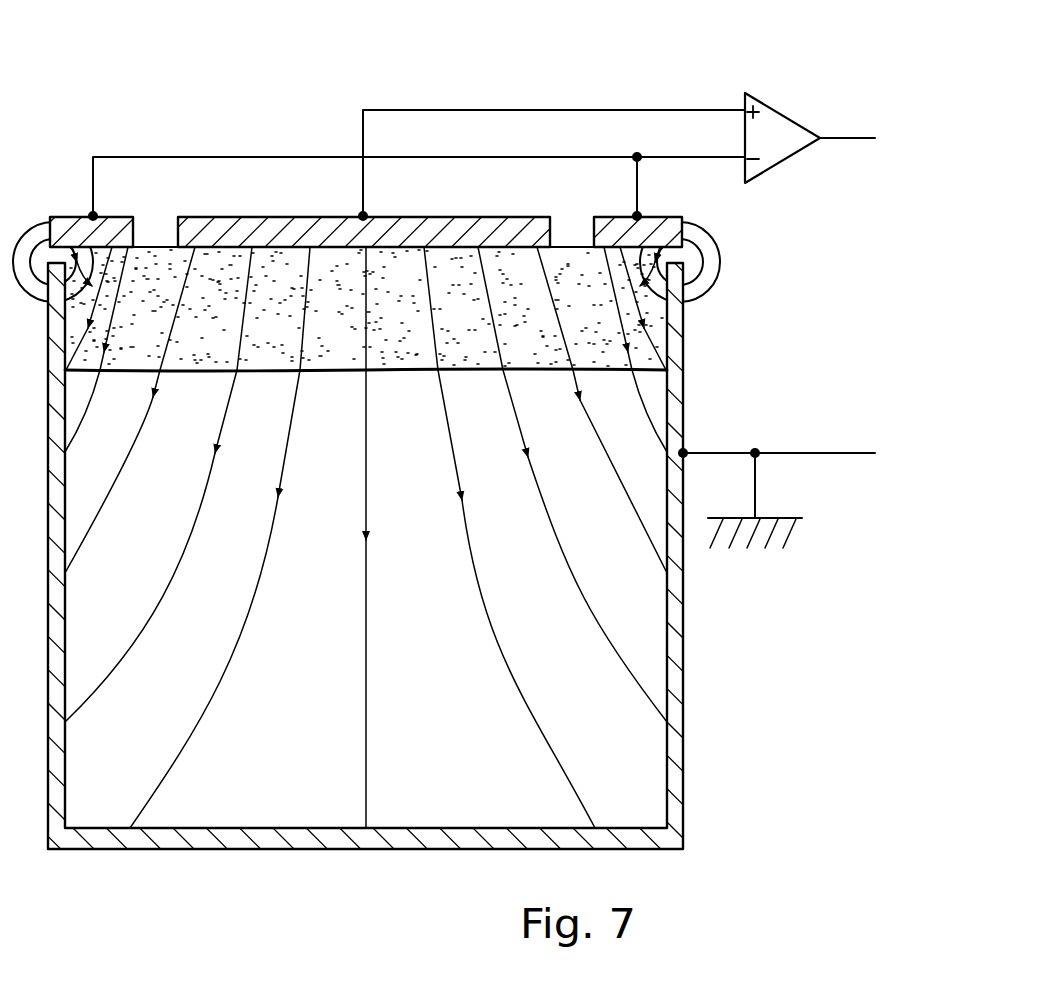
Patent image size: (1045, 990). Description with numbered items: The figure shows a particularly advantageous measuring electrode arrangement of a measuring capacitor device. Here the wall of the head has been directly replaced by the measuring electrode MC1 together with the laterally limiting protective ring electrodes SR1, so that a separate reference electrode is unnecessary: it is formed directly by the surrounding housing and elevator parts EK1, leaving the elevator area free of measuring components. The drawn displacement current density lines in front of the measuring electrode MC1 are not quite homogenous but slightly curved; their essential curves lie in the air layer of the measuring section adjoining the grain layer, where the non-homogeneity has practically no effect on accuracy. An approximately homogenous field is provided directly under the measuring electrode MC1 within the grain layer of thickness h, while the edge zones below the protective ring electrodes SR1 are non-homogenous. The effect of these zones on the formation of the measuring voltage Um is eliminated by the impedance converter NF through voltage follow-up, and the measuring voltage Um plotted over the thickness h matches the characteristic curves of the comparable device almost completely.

The protective ring electrode SR1 is at (61, 228).
The measuring electrode MC1 is at (435, 238).
The impedance converter NF is at (770, 122).
The surrounding housing and elevator parts EK1 is at (673, 650).
The measuring voltage Um is at (843, 155).
The thickness of the grain layer h is at (397, 252).